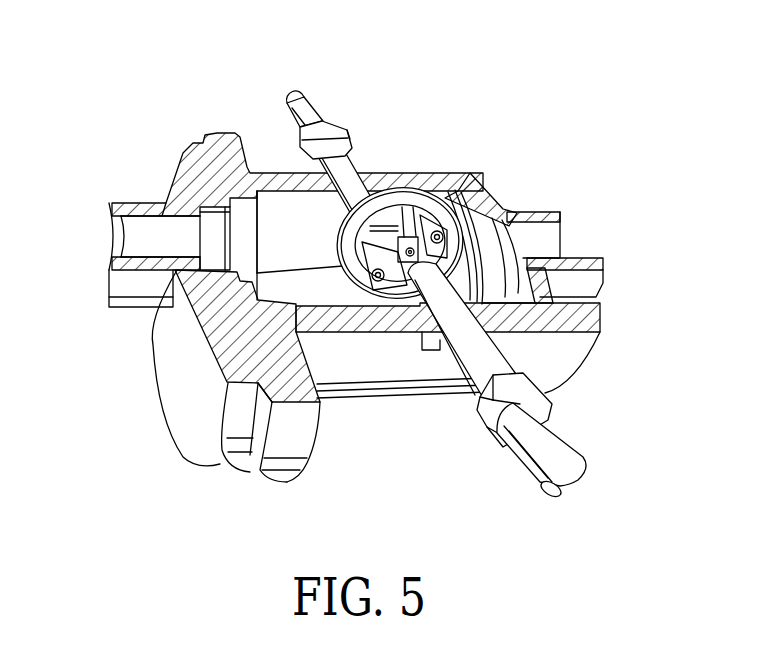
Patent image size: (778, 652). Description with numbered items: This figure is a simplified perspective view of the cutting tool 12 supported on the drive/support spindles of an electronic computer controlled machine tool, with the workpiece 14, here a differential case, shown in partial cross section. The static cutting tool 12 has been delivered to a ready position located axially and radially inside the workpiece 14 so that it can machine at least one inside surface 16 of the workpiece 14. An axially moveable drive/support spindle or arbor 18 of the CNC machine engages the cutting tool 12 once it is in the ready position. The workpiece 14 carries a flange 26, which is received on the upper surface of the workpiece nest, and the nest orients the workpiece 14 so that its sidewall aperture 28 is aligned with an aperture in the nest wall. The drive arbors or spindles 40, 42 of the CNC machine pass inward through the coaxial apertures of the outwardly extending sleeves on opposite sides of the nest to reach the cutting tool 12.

The cutting tool 12 is at (428, 188).
The workpiece 14 is at (473, 178).
The inside surface 16 is at (345, 210).
The drive/support spindle or arbor 18 is at (318, 96).
The flange 26 is at (316, 444).
The sidewall aperture 28 is at (320, 290).
The drive arbor or spindle 40 is at (514, 356).
The drive arbor or spindle 42 is at (358, 168).